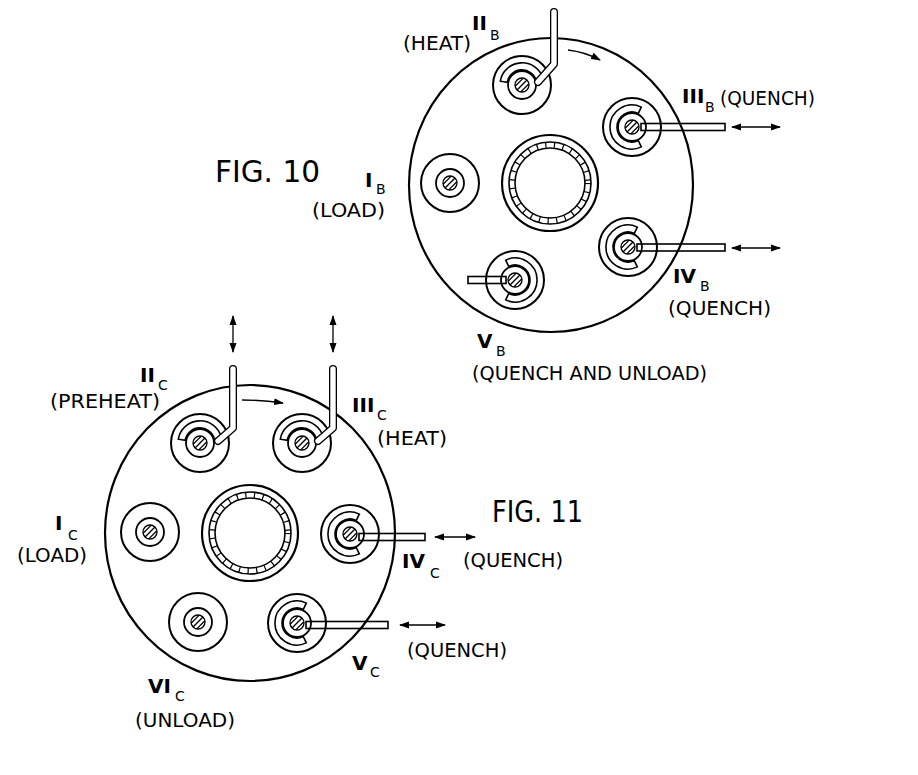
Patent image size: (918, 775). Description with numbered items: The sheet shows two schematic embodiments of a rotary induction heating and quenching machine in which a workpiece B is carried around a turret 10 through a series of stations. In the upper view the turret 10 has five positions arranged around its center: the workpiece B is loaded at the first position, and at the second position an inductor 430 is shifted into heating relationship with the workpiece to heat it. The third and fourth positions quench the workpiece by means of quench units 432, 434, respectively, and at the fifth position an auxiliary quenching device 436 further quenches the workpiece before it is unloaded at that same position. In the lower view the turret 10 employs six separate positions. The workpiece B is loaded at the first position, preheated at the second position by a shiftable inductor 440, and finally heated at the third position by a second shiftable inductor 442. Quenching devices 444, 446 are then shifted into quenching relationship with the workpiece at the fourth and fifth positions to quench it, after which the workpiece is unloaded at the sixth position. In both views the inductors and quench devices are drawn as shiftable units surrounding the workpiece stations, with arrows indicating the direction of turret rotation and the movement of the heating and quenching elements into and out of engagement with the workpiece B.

In FIG. 10, the turret 10 is at (633, 53).
In FIG. 11, the turret 10 is at (136, 456).
In FIG. 10, the workpiece B is at (440, 176).
In FIG. 11, the workpiece B is at (195, 449).
In FIG. 10, the inductor 430 is at (530, 61).
In FIG. 10, the quench unit 432 is at (642, 110).
In FIG. 10, the quench unit 434 is at (693, 236).
In FIG. 10, the auxiliary quenching device 436 is at (498, 267).
In FIG. 11, the shiftable inductor 440 is at (203, 430).
In FIG. 11, the shiftable inductor 442 is at (307, 430).
In FIG. 11, the quenching device 444 is at (401, 524).
In FIG. 11, the quenching device 446 is at (308, 638).